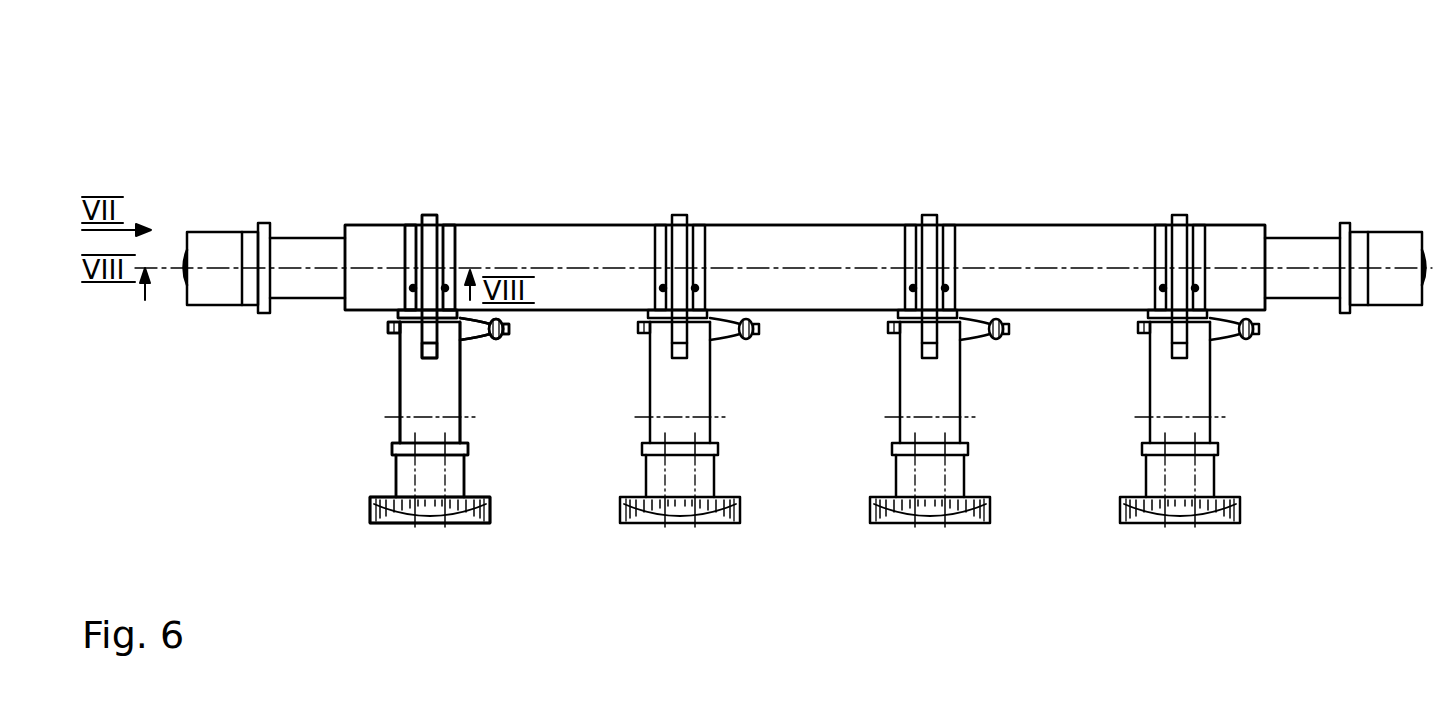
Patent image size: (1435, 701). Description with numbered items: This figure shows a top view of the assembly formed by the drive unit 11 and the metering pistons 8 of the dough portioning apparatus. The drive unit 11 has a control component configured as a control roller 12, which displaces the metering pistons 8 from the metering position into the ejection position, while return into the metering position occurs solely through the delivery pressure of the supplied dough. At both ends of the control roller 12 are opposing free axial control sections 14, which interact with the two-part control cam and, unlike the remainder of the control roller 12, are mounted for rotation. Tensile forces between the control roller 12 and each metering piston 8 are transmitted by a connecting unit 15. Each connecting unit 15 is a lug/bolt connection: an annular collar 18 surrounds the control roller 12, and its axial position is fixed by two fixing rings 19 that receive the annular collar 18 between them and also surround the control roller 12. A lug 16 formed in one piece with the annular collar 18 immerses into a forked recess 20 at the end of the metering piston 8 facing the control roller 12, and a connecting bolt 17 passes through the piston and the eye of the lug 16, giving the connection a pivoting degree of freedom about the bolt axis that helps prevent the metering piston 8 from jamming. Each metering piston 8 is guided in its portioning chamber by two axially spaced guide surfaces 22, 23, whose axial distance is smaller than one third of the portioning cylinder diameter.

The metering piston 8 is at (430, 532).
The drive unit 11 is at (965, 178).
The control roller 12 is at (781, 233).
The free axial control section 14 is at (213, 243).
The connecting unit 15 is at (478, 358).
The lug 16 is at (420, 340).
The connecting bolt 17 is at (473, 343).
The annular collar 18 is at (430, 225).
The fixing ring 19 is at (410, 232).
The forked recess 20 is at (420, 352).
The guide surface 22 is at (372, 504).
The guide surface 23 is at (400, 447).